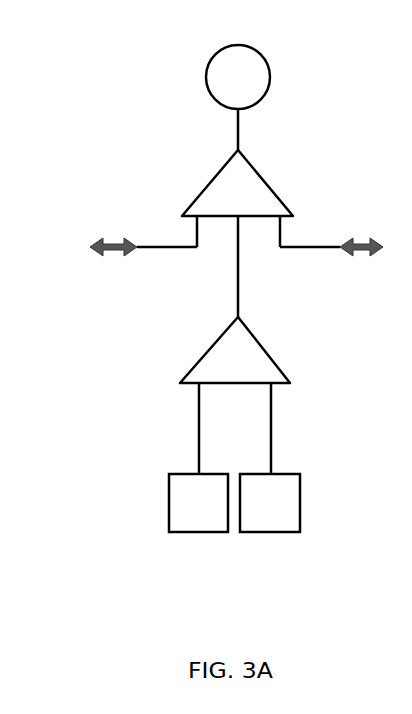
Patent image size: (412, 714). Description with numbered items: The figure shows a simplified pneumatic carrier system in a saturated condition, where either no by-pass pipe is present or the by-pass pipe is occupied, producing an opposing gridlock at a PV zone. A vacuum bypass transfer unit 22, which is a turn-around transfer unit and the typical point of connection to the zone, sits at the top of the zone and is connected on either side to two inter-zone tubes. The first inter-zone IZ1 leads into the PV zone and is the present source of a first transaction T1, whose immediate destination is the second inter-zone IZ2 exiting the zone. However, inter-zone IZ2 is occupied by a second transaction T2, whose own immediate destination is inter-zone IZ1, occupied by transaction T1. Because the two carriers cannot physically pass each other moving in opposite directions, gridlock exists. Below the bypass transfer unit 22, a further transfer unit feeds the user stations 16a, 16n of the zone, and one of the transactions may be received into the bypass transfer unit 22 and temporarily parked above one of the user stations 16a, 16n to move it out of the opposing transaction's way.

The vacuum bypass transfer unit 22 is at (237, 183).
The first transaction T1 is at (110, 247).
The second transaction T2 is at (357, 249).
The first inter-zone IZ1 is at (166, 248).
The second inter-zone IZ2 is at (314, 247).
The user station 16a is at (188, 532).
The user station 16n is at (262, 532).